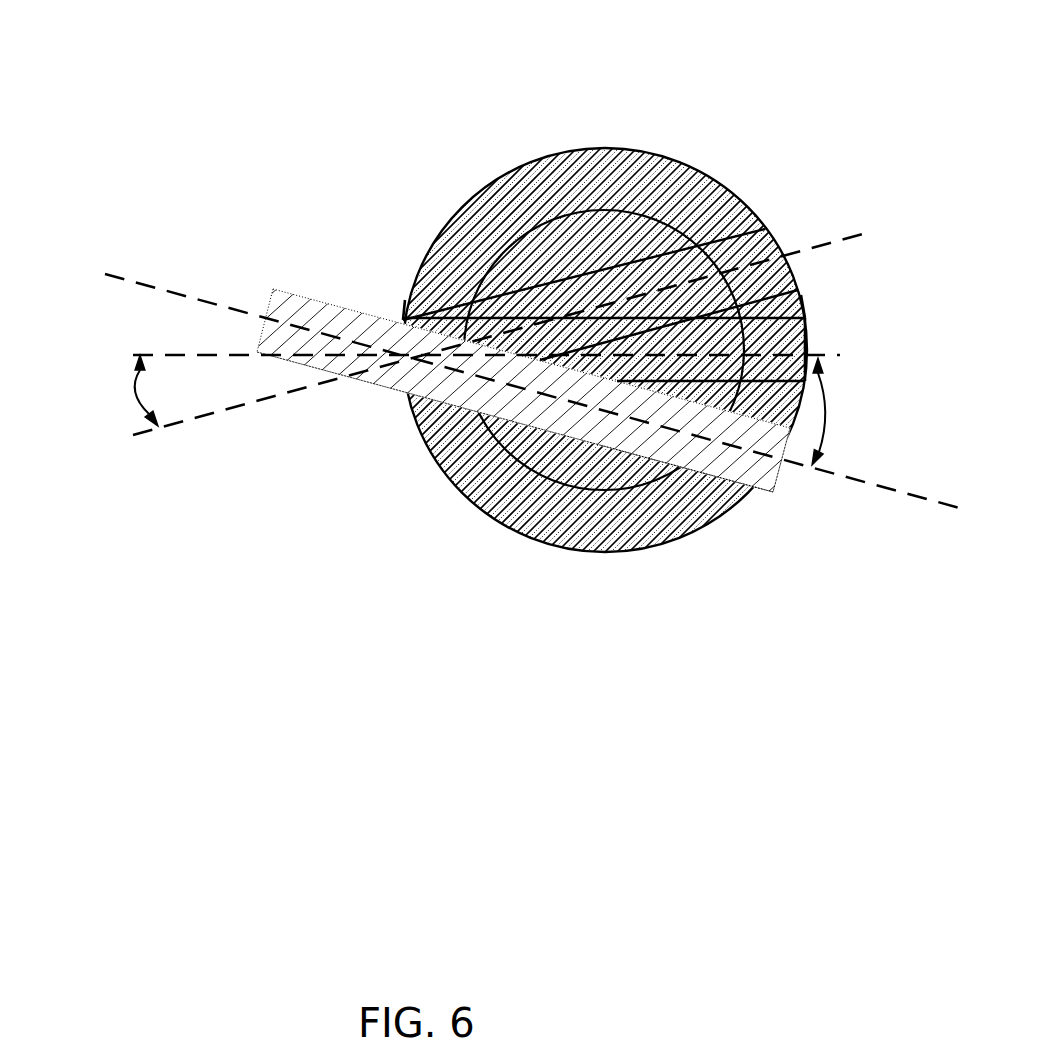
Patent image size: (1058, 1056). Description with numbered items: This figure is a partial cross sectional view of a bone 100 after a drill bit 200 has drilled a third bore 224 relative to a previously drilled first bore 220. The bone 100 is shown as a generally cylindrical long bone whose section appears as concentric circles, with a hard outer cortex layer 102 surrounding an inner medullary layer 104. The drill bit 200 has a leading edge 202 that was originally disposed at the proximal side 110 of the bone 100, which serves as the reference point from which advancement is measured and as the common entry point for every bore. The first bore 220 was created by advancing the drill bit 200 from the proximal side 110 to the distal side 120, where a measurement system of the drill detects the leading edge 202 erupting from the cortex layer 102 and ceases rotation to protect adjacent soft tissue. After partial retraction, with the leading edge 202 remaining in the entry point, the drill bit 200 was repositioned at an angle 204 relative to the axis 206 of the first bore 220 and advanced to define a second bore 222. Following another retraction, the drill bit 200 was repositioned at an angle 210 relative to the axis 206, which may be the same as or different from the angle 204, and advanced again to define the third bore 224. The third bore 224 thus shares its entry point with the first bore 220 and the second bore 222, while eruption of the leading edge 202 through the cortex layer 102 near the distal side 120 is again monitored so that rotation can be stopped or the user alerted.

The bone 100 is at (541, 113).
The cortex layer 102 is at (642, 185).
The medullary layer 104 is at (635, 238).
The proximal side 110 is at (386, 272).
The distal side 120 is at (821, 293).
The drill bit 200 is at (245, 295).
The leading edge 202 is at (773, 460).
The angle 204 is at (135, 395).
The axis 206 is at (238, 355).
The angle 210 is at (823, 413).
The first bore 220 is at (697, 387).
The second bore 222 is at (498, 293).
The third bore 224 is at (522, 420).